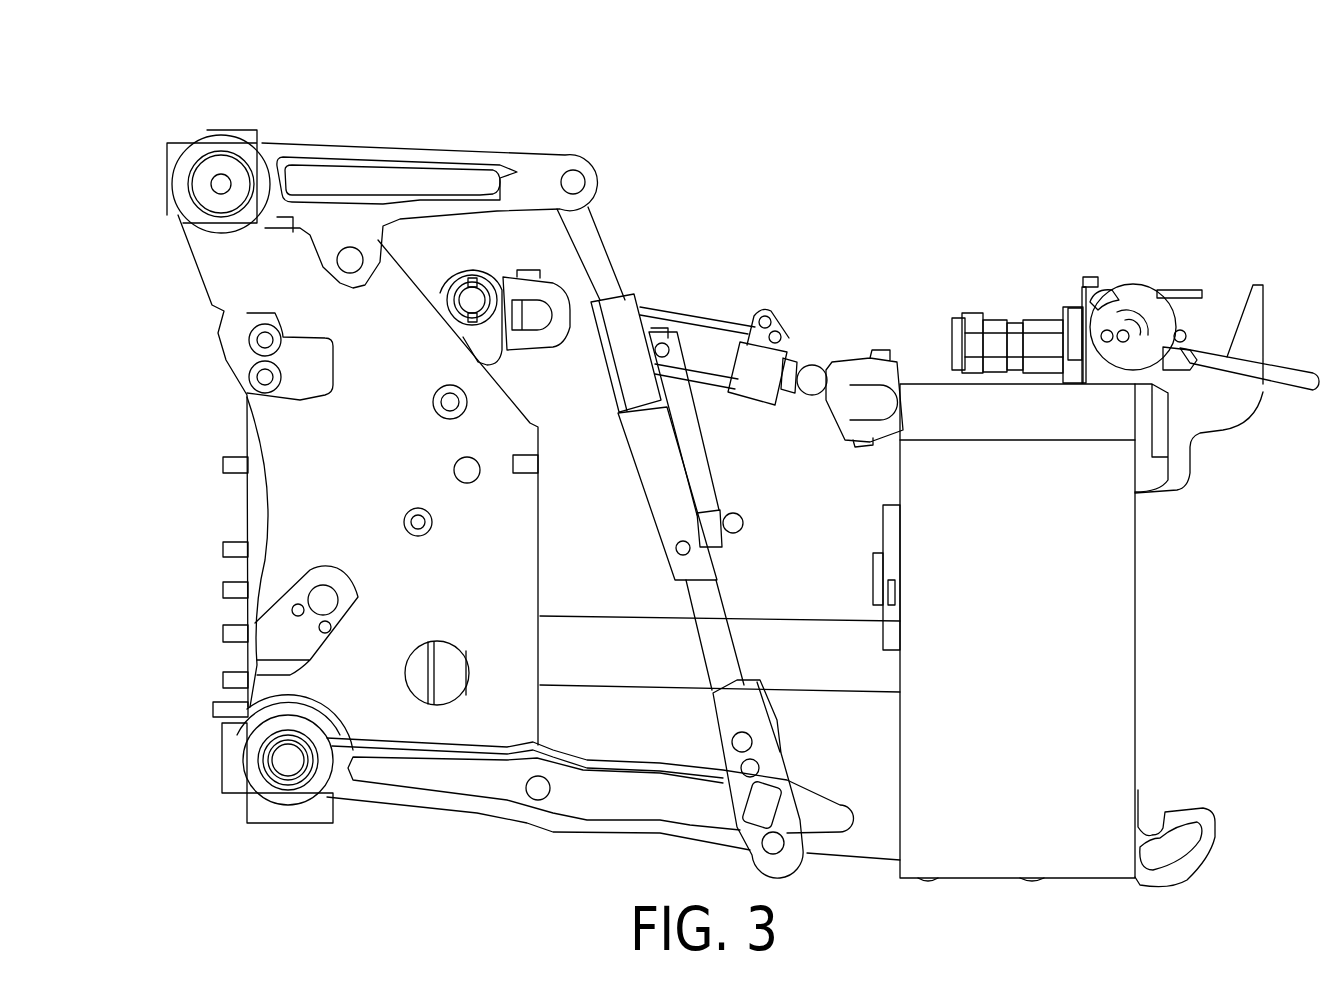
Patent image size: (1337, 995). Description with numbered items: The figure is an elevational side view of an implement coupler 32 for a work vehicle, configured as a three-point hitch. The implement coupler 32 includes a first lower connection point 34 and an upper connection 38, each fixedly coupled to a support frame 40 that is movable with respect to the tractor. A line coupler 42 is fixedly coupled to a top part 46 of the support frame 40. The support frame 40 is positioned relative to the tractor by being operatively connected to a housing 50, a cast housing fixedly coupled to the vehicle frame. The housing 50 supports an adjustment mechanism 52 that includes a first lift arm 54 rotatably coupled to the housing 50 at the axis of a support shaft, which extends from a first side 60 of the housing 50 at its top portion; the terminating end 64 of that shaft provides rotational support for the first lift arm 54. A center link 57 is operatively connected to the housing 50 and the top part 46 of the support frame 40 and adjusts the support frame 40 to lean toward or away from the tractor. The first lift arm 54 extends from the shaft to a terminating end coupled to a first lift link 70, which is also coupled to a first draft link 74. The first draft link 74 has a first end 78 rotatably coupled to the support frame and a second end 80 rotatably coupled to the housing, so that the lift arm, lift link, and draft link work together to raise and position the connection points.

The implement coupler 32 is at (747, 127).
The first lower connection point 34 is at (1177, 855).
The upper connection 38 is at (1255, 338).
The support frame 40 is at (1020, 850).
The line coupler 42 is at (1120, 320).
The top part of the support frame 46 is at (935, 400).
The housing 50 is at (228, 283).
The adjustment mechanism 52 is at (452, 126).
The first lift arm 54 is at (335, 168).
The center link 57 is at (713, 318).
The first side of the housing 60 is at (308, 498).
The terminating end 64 is at (176, 186).
The first lift link 70 is at (645, 480).
The first draft link 74 is at (480, 790).
The first end 78 is at (288, 805).
The second end 80 is at (897, 848).